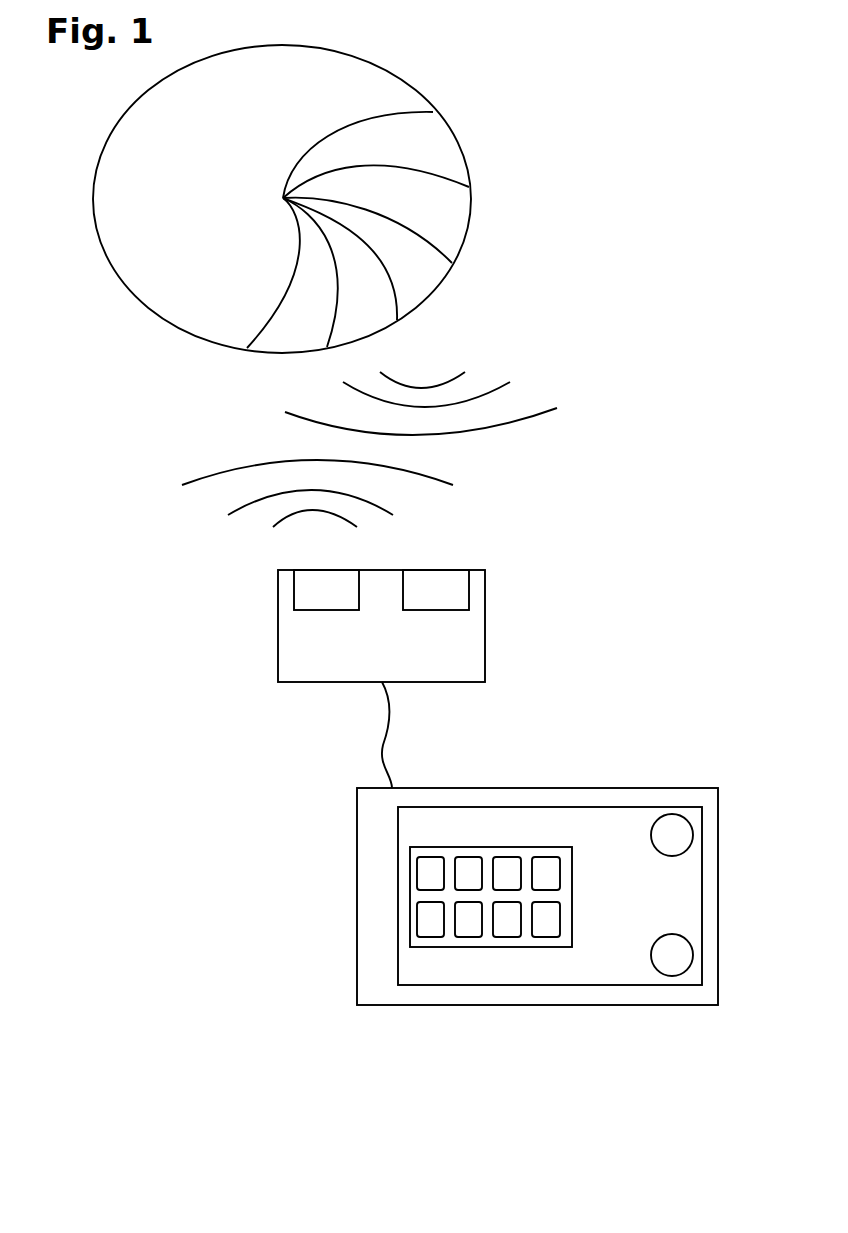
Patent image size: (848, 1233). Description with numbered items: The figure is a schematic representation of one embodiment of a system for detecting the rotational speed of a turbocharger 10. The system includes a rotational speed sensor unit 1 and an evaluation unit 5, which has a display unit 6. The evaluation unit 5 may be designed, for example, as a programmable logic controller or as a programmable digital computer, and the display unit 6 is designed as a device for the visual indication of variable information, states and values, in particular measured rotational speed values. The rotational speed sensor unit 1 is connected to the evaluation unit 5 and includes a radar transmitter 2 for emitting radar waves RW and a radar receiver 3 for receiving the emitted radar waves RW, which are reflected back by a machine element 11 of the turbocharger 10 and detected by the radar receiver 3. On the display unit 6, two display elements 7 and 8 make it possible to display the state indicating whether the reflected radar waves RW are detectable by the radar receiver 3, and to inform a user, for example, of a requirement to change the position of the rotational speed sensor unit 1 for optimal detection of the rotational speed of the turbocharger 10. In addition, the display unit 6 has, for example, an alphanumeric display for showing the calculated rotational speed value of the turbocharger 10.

The rotational speed sensor unit 1 is at (278, 660).
The radar transmitter 2 is at (278, 587).
The radar receiver 3 is at (469, 583).
The evaluation unit 5 is at (457, 1005).
The display unit 6 is at (617, 983).
The display element 7 is at (690, 943).
The display element 8 is at (690, 823).
The turbocharger 10 is at (145, 305).
The machine element 11 is at (407, 218).
The radar waves RW is at (575, 370).